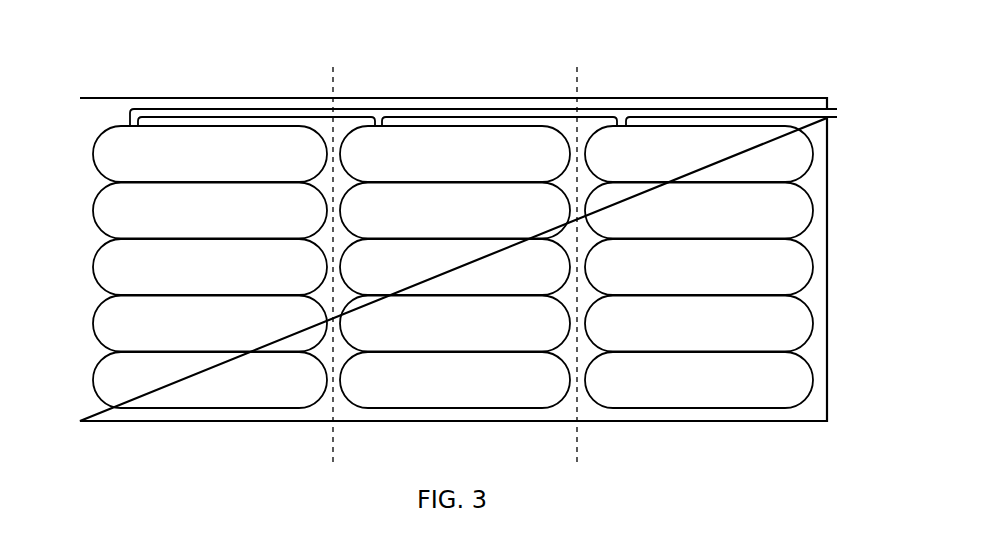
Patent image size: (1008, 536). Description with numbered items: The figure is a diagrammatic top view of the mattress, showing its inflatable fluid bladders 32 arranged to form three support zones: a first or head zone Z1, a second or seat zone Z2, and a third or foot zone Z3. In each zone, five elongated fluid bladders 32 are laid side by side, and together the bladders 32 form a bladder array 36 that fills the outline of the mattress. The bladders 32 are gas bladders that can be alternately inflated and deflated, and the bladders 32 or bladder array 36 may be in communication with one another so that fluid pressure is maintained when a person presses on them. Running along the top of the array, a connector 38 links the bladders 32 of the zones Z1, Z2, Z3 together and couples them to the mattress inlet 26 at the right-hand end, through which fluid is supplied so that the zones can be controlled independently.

The mattress inlet 26 is at (838, 108).
The fluid bladder 32 is at (806, 171).
The bladder array 36 is at (72, 98).
The connector 38 is at (532, 114).
The head zone Z1 is at (333, 73).
The seat zone Z2 is at (335, 73).
The foot zone Z3 is at (579, 73).